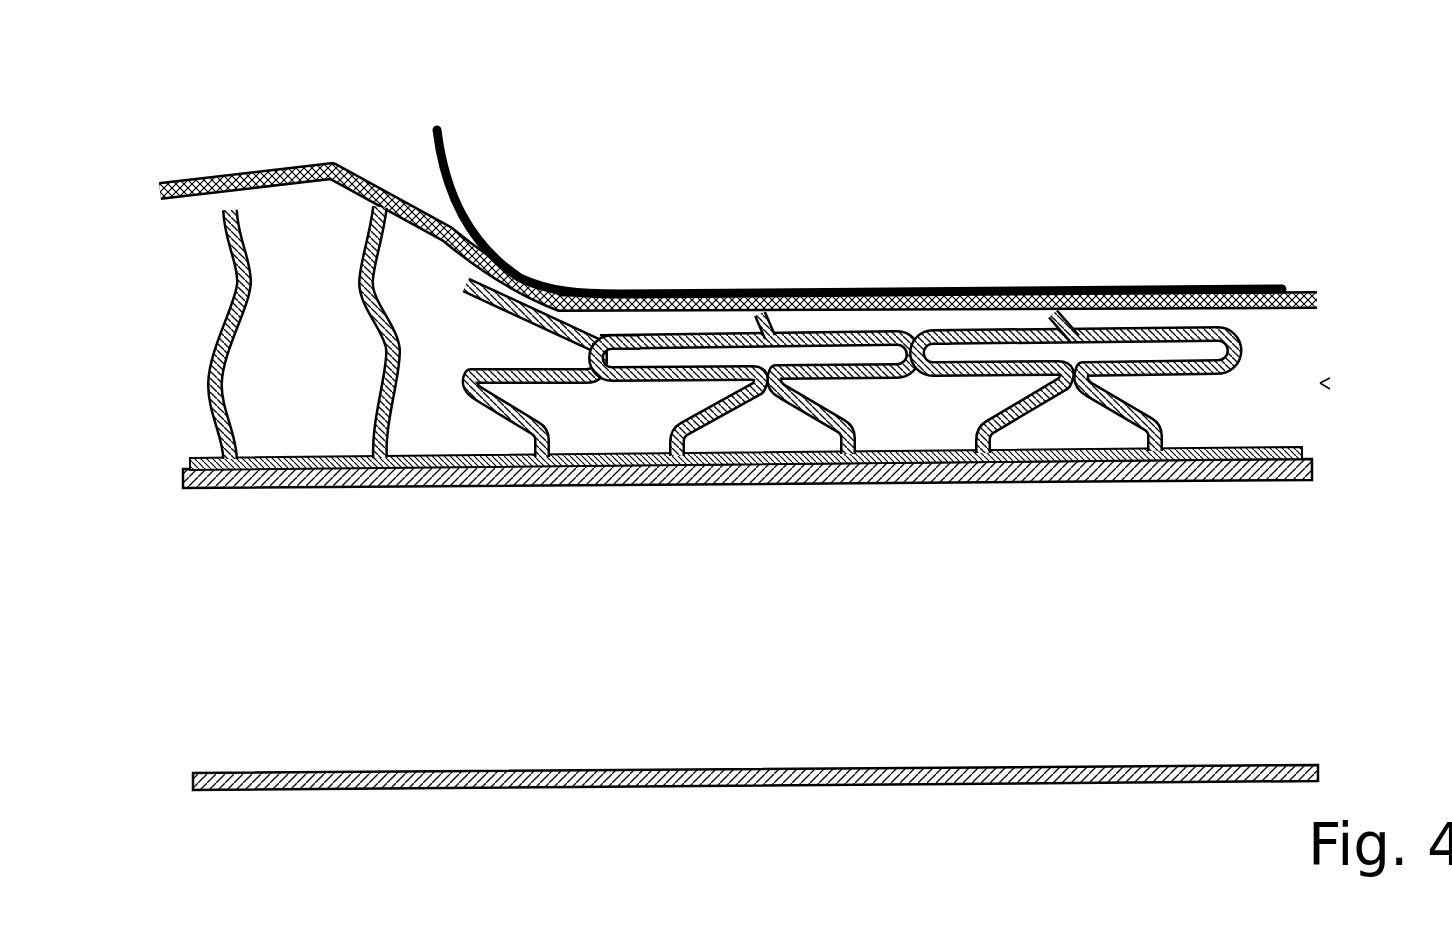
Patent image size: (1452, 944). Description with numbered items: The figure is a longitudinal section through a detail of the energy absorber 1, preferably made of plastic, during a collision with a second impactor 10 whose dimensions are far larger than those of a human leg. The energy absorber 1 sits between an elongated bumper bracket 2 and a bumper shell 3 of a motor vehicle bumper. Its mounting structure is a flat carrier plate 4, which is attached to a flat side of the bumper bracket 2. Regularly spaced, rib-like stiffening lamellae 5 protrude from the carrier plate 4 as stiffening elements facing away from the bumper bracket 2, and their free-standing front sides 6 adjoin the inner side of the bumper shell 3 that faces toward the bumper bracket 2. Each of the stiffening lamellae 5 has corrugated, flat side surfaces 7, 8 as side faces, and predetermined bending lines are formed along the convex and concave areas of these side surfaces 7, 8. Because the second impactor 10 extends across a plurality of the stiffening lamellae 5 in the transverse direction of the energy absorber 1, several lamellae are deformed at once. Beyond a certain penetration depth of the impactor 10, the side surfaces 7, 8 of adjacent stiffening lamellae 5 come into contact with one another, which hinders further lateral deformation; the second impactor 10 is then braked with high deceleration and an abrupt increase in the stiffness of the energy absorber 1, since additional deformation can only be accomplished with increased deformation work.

The energy absorber 1 is at (1320, 383).
The bumper bracket 2 is at (713, 790).
The bumper shell 3 is at (218, 177).
The carrier plate 4 is at (207, 457).
The stiffening lamellae 5 is at (250, 283).
The front sides 6 is at (232, 209).
The side surface 7 is at (390, 248).
The side surface 8 is at (229, 268).
The second impactor 10 is at (432, 165).